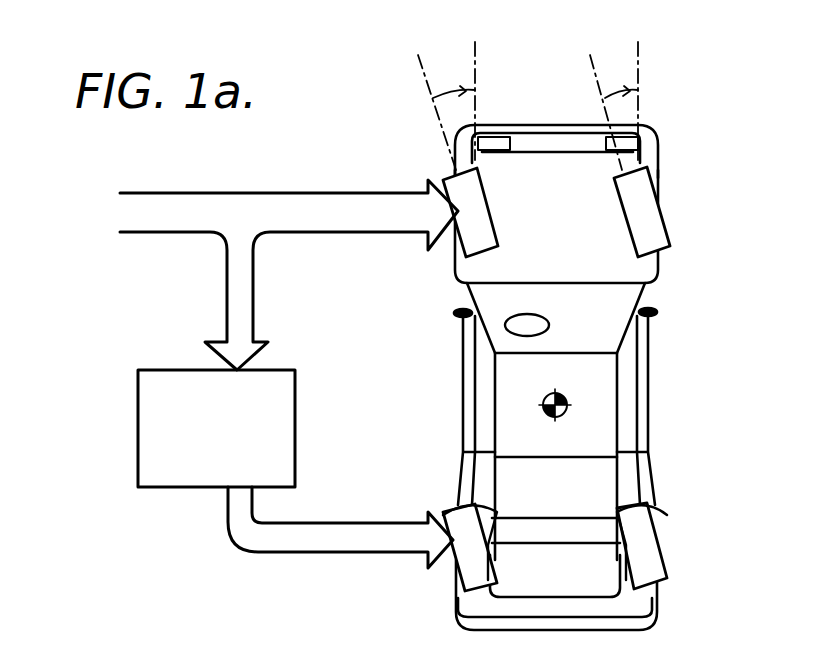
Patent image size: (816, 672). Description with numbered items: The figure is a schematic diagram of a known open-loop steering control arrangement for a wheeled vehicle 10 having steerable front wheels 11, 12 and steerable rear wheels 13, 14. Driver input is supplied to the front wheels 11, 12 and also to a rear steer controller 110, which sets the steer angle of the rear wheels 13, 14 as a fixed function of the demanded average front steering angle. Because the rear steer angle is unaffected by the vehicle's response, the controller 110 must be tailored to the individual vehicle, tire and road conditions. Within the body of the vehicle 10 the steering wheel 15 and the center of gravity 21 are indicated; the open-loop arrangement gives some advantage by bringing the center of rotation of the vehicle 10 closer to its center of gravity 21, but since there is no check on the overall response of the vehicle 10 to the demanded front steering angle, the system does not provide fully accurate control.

The vehicle 10 is at (290, 582).
The steerable front wheel 11 is at (458, 173).
The steerable front wheel 12 is at (640, 193).
The steerable rear wheel 13 is at (443, 577).
The steerable rear wheel 14 is at (652, 565).
The steering wheel 15 is at (507, 328).
The center of gravity 21 is at (567, 402).
The controller 110 is at (138, 432).